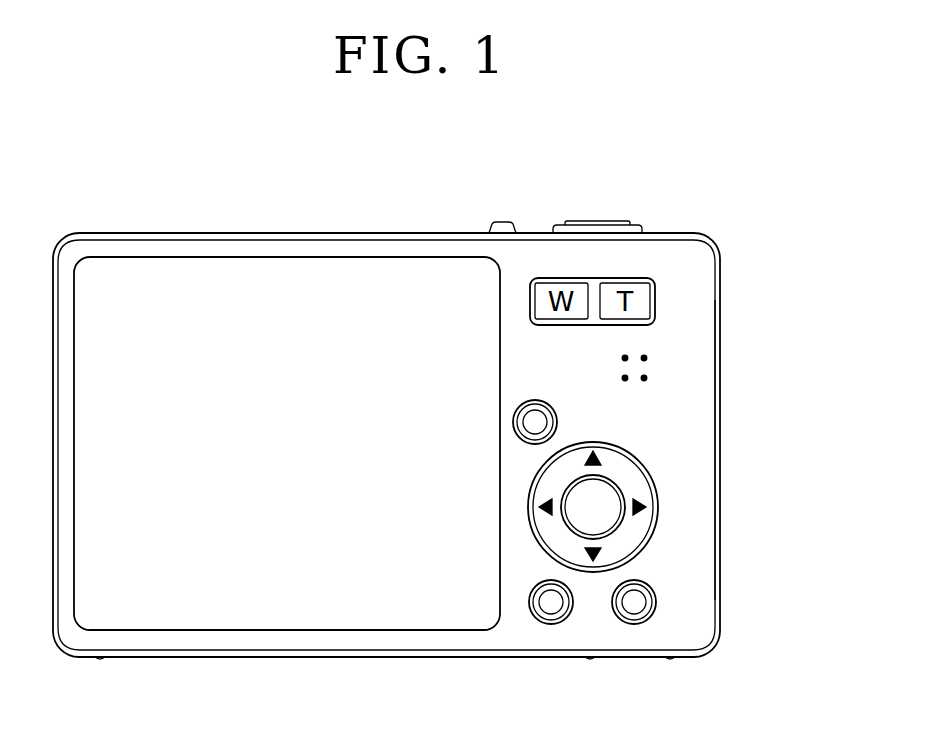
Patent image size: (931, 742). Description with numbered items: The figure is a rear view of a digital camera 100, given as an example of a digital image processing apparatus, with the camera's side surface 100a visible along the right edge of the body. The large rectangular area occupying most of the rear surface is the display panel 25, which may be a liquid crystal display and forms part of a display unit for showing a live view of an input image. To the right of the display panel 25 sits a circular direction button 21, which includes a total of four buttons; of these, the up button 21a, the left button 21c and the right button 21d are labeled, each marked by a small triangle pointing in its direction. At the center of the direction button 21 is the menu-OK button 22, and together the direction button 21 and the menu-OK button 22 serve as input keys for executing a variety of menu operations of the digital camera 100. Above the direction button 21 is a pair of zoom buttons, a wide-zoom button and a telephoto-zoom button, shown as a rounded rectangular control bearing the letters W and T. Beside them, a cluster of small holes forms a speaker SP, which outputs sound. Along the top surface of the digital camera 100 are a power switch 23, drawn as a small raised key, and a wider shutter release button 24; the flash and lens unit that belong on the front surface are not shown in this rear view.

The digital camera 100 is at (713, 207).
The side surface of camera body 100a is at (720, 447).
The direction button 21 is at (611, 554).
The up button 21a is at (593, 451).
The left button 21c is at (539, 507).
The right button 21d is at (646, 507).
The menu-OK button 22 is at (578, 483).
The power switch 23 is at (503, 232).
The shutter release button 24 is at (598, 225).
The display panel 25 is at (281, 617).
The speaker SP is at (644, 358).